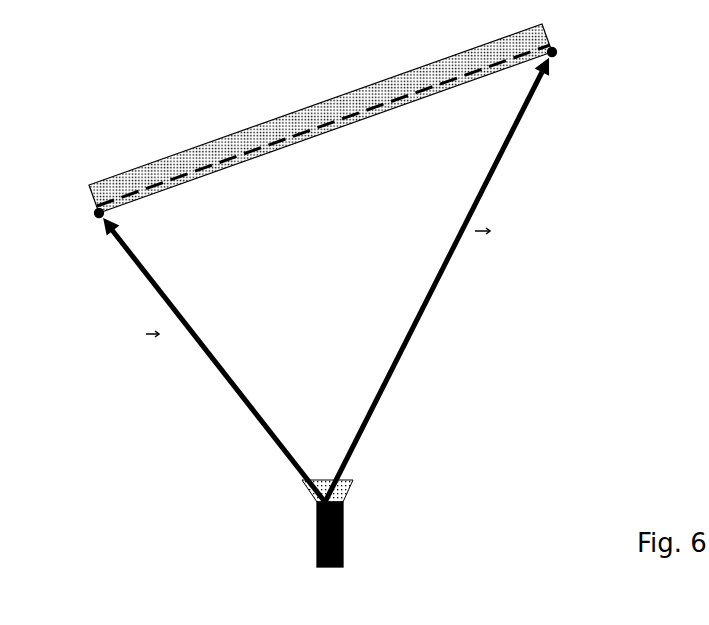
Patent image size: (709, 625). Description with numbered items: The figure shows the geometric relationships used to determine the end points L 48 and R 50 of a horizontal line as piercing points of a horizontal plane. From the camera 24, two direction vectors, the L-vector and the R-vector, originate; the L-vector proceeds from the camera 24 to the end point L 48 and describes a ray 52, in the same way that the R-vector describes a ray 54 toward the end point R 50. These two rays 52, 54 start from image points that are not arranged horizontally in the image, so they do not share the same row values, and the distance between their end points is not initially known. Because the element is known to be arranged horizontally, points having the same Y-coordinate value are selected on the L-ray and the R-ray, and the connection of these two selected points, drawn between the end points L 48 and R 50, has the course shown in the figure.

The camera 24 is at (343, 537).
The end point L 48 is at (95, 218).
The end point R 50 is at (557, 57).
The ray 52 is at (258, 421).
The ray 54 is at (412, 342).